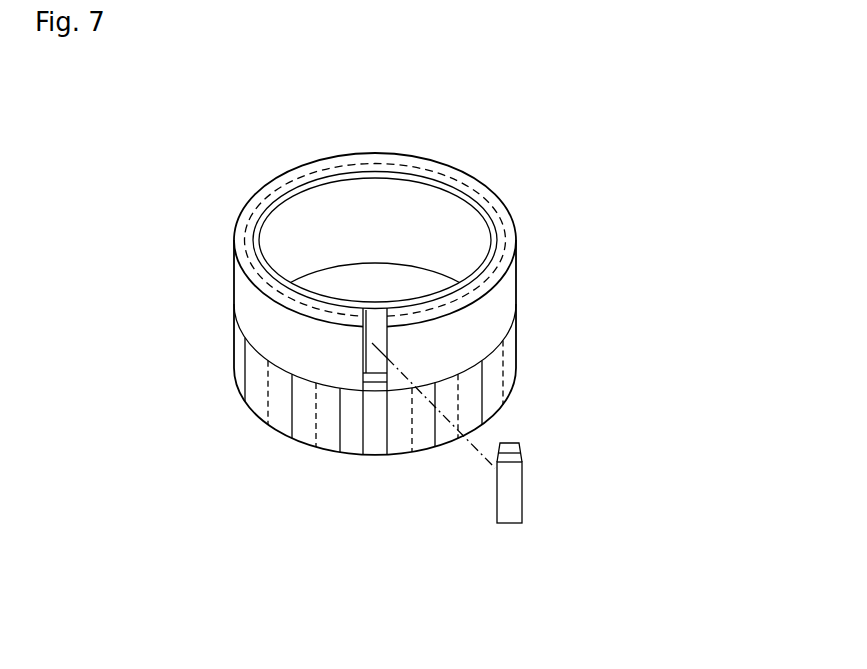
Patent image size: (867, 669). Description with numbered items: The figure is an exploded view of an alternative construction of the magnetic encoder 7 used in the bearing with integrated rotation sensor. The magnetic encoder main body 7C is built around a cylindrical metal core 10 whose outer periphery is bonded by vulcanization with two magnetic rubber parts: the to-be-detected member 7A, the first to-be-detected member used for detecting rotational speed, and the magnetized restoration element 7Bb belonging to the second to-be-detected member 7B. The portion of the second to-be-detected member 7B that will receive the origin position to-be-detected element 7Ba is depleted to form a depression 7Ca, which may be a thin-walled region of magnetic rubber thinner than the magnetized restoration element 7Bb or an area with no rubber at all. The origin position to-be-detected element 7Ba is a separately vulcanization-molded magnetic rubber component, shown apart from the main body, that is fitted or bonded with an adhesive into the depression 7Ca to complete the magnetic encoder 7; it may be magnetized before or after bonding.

The magnetic encoder 7 is at (212, 196).
The cylindrical metal core 10 is at (400, 190).
The to-be-detected member 7A is at (255, 410).
The second to-be-detected member 7B is at (678, 371).
The origin position to-be-detected element 7Ba is at (517, 473).
The magnetized restoration element 7Bb is at (497, 322).
The magnetic encoder main body 7C is at (520, 270).
The depression 7Ca is at (374, 325).